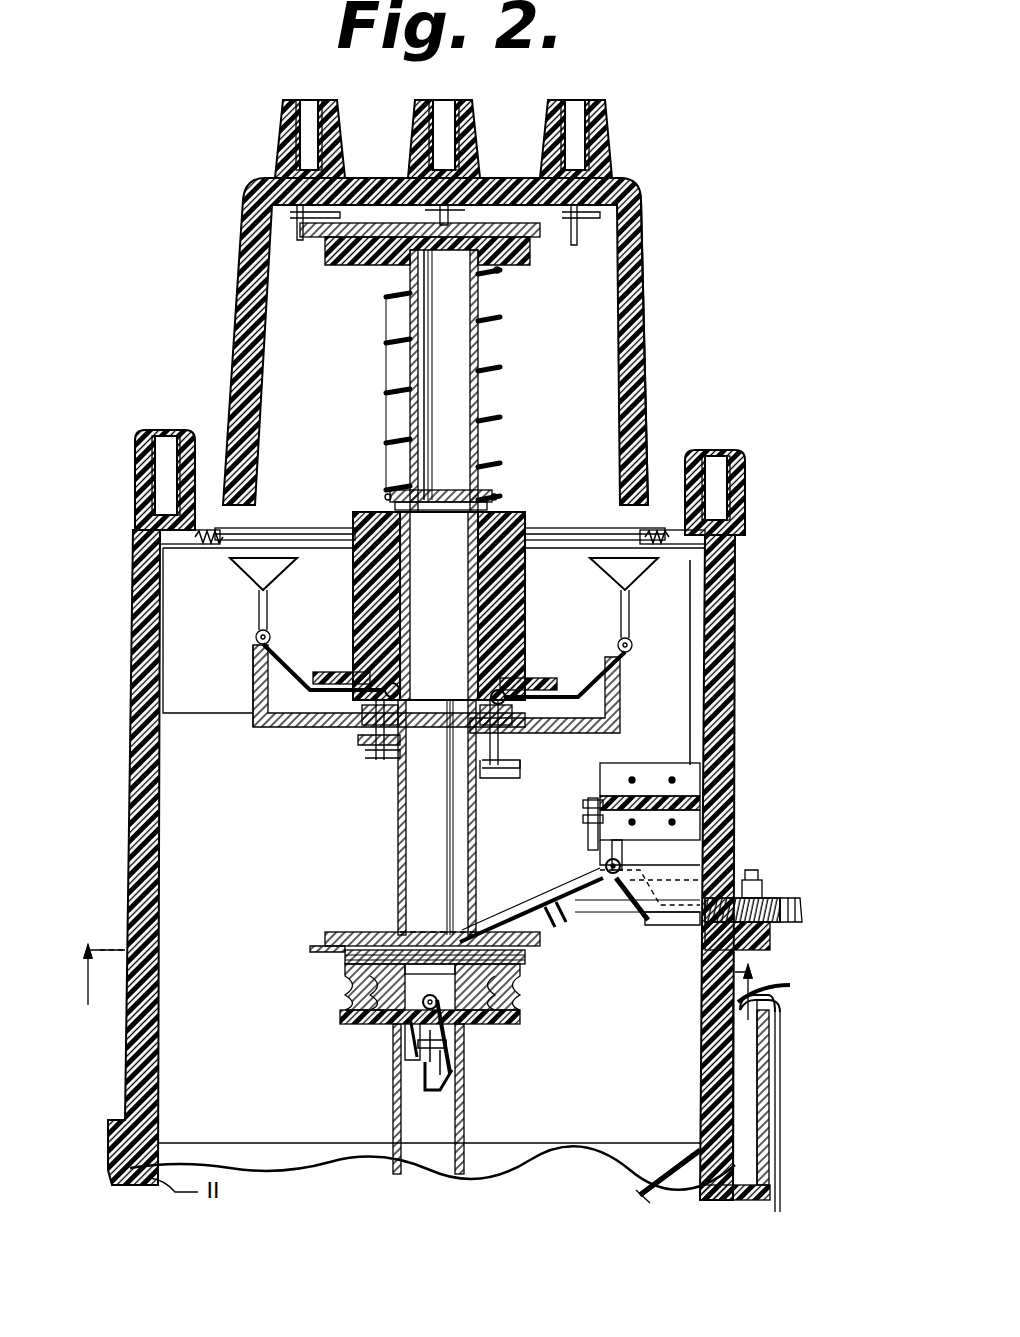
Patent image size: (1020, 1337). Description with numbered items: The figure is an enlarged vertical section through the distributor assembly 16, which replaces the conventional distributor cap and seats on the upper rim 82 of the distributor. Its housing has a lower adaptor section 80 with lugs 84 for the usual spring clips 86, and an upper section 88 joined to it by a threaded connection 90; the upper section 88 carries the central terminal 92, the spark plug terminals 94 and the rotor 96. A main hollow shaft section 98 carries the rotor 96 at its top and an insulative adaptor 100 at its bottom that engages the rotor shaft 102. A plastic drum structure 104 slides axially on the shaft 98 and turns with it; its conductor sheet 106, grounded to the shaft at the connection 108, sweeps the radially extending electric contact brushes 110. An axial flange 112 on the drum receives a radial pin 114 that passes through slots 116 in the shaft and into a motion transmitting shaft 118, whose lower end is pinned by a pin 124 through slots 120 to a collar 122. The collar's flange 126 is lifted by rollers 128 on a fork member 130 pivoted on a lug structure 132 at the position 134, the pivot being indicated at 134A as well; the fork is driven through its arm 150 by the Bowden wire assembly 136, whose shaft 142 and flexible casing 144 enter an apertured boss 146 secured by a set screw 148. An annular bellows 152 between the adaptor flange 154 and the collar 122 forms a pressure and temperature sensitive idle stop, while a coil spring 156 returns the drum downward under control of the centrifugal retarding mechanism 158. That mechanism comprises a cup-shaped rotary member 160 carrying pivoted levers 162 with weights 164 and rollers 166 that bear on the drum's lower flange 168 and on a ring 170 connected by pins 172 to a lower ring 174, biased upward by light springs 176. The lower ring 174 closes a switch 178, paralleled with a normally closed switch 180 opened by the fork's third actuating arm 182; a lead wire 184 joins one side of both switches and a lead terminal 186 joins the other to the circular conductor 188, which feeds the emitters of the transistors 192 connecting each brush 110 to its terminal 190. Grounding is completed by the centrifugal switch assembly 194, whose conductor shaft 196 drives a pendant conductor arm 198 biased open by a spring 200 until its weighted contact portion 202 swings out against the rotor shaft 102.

The distributor assembly 16 is at (656, 238).
The lower adaptor section 80 is at (90, 944).
The upper rim 82 is at (650, 1200).
The lugs 84 is at (762, 1078).
The spring clips 86 is at (790, 1000).
The upper section 88 is at (232, 362).
The threaded connection 90 is at (133, 742).
The central terminal 92 is at (478, 125).
The spark plug terminals 94 is at (340, 128).
The rotor 96 is at (530, 262).
The main hollow shaft section 98 is at (398, 770).
The adaptor 100 is at (455, 1020).
The rotor shaft 102 is at (465, 1150).
The drum structure 104 is at (522, 512).
The conductor sheet 106 is at (530, 600).
The electrical connection 108 is at (522, 652).
The electric contact brushes 110 is at (318, 528).
The axial flange 112 is at (495, 500).
The radial pin 114 is at (390, 494).
The axially extending slots 116 is at (490, 322).
The motion transmitting shaft 118 is at (440, 490).
The axially elongated slots 120 is at (470, 796).
The collar 122 is at (520, 976).
The pin 124 is at (345, 962).
The radially outwardly extending flange 126 is at (540, 940).
The rollers 128 is at (400, 925).
The fork member 130 is at (560, 880).
The lug structure 132 is at (588, 828).
The pivot position 134 is at (535, 905).
The lever arm portion 134A is at (604, 900).
The Bowden wire assembly 136 is at (798, 896).
The shaft 142 is at (655, 926).
The flexible casing 144 is at (782, 905).
The apertured boss 146 is at (772, 945).
The set screw 148 is at (752, 878).
The arm 150 is at (640, 935).
The annular bellows 152 is at (520, 1005).
The annular flange 154 is at (345, 1024).
The coil spring 156 is at (380, 395).
The centrifugal retarding mechanism 158 is at (318, 733).
The rotary member 160 is at (620, 680).
The pivoted levers 162 is at (258, 620).
The weights 164 is at (280, 575).
The rollers 166 is at (300, 690).
The lower flange 168 is at (300, 680).
The ring 170 is at (365, 740).
The pins 172 is at (370, 748).
The lower ring 174 is at (520, 770).
The light springs 176 is at (400, 742).
The switch 178 is at (735, 768).
The switch 180 is at (738, 798).
The third actuating arm 182 is at (738, 822).
The lead wire 184 is at (612, 848).
The lead terminal 186 is at (738, 562).
The circular conductor 188 is at (128, 546).
The terminal 190 is at (135, 445).
The transistor 192 is at (200, 548).
The centrifugal switch assembly 194 is at (468, 1084).
The conductor shaft 196 is at (402, 1040).
The pendant conductor arm 198 is at (398, 1080).
The spring 200 is at (460, 1055).
The eccentric weighted contact portion 202 is at (455, 1105).